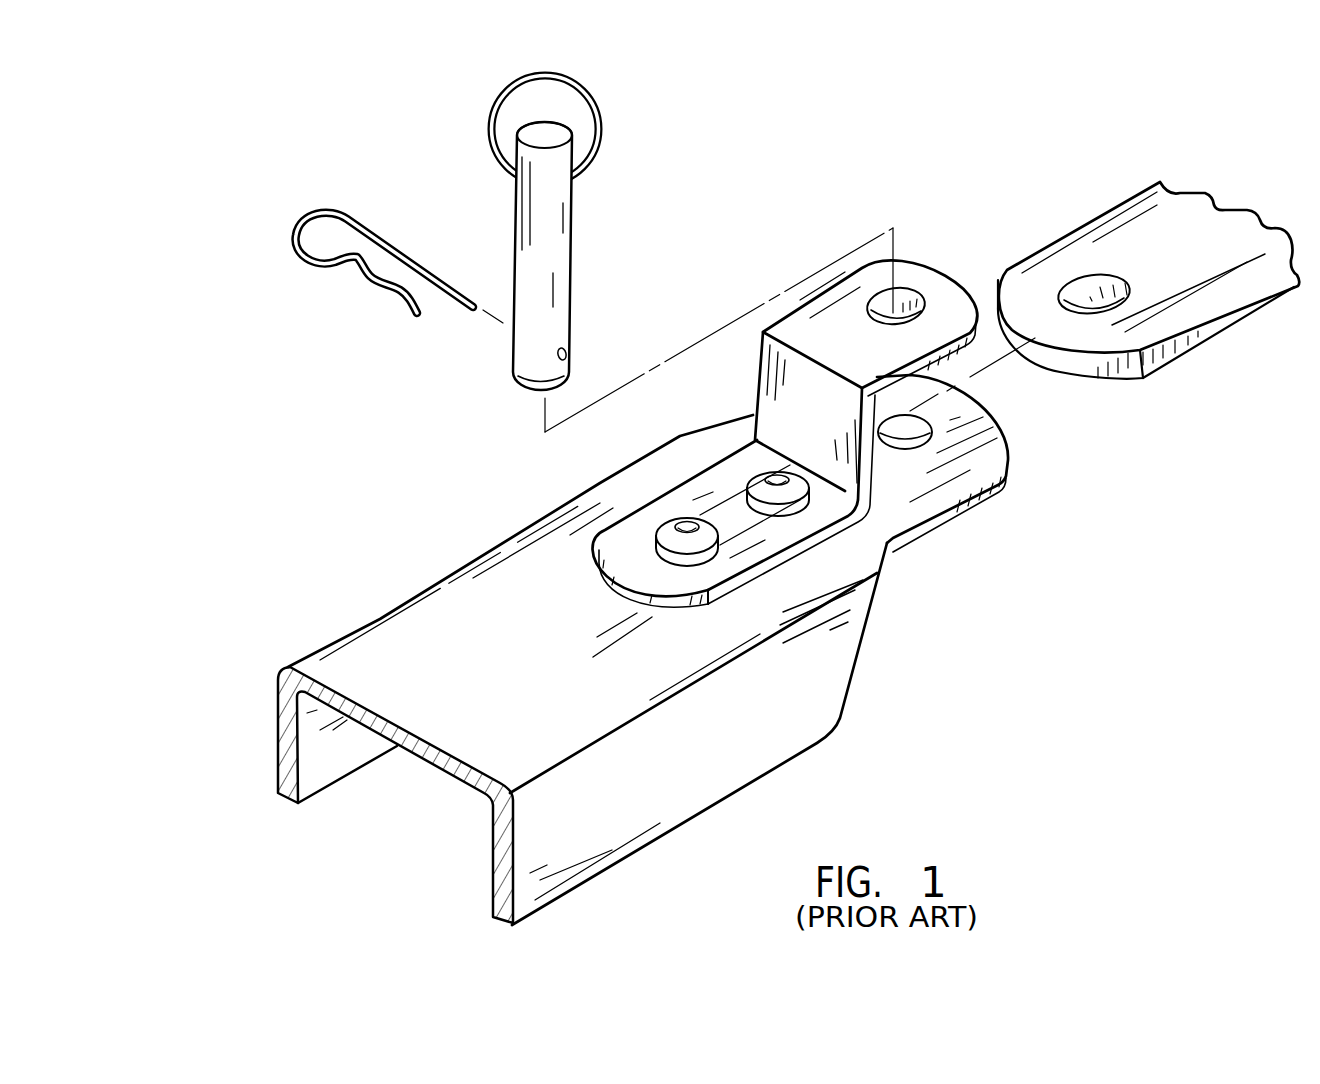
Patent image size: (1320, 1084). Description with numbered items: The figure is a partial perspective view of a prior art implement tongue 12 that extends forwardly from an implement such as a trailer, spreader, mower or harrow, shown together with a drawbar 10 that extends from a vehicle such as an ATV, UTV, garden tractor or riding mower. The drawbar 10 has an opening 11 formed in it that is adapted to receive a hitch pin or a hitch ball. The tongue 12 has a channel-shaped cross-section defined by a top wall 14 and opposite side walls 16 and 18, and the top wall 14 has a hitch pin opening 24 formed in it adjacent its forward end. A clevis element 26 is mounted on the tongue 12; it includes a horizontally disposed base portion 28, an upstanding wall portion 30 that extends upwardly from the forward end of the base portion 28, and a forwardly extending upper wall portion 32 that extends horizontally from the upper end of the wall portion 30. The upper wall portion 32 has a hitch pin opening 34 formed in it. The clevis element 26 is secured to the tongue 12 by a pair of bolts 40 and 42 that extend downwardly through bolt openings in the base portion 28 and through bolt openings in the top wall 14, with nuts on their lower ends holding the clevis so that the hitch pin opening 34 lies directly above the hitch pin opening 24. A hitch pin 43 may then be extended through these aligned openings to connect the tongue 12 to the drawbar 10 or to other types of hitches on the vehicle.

The drawbar 10 is at (1069, 222).
The opening 11 is at (1128, 290).
The tongue 12 is at (416, 586).
The top wall 14 is at (508, 692).
The side wall 16 is at (342, 774).
The side wall 18 is at (680, 795).
The hitch pin opening 24 is at (912, 440).
The clevis element 26 is at (920, 256).
The base portion 28 is at (758, 541).
The upstanding wall portion 30 is at (813, 430).
The upper wall portion 32 is at (843, 350).
The hitch pin opening 34 is at (918, 300).
The bolt 40 is at (656, 540).
The bolt 42 is at (790, 498).
The hitch pin 43 is at (586, 246).